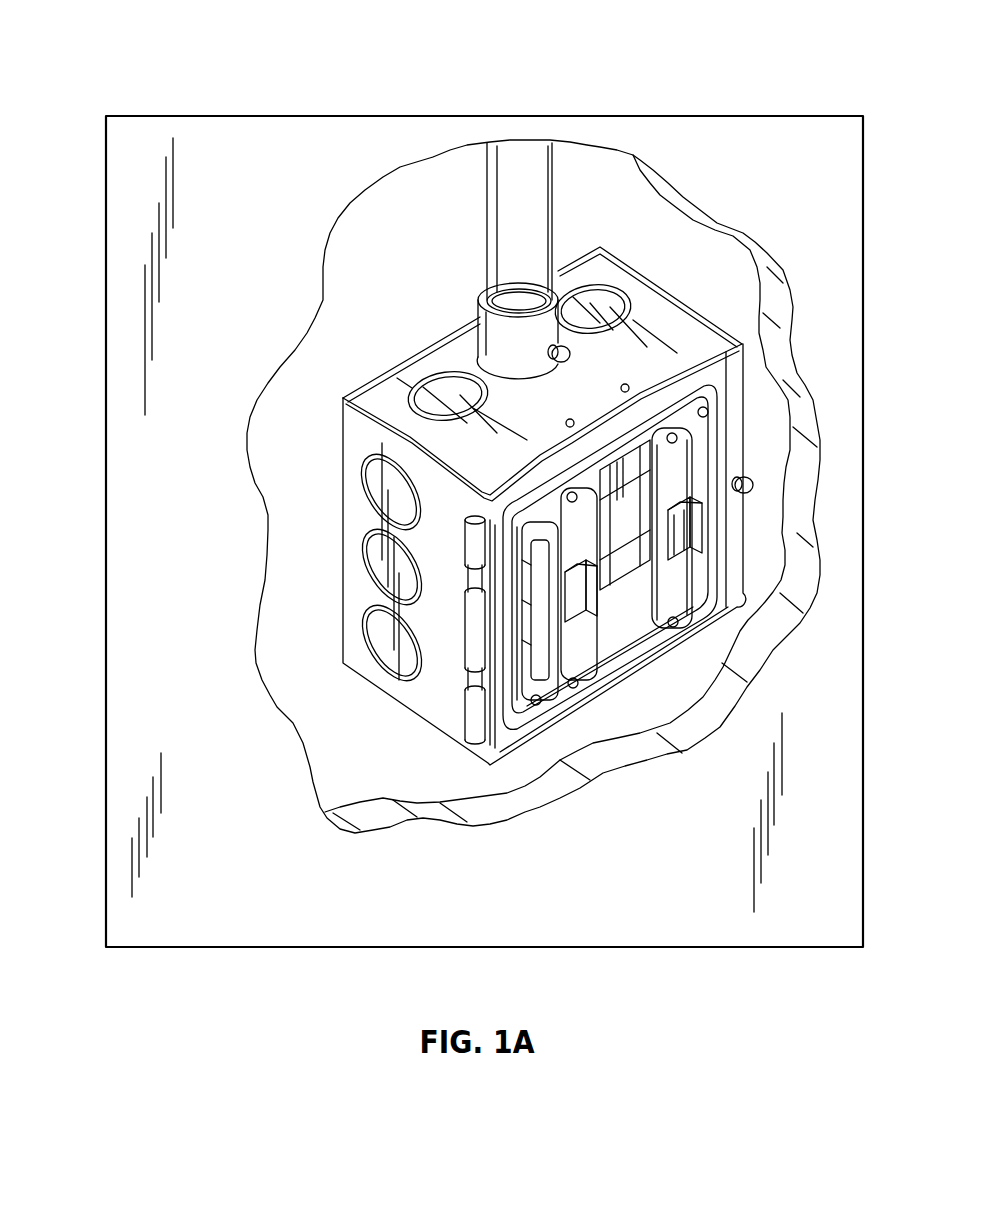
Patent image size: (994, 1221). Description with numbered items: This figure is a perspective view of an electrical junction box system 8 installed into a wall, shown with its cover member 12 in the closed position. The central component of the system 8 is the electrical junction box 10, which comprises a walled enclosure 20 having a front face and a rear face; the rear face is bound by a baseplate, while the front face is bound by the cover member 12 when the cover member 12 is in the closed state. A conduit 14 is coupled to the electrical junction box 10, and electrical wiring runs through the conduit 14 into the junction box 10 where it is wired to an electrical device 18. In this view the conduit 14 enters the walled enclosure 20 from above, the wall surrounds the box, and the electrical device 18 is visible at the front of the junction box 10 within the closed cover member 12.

The electrical junction box system 8 is at (696, 273).
The electrical junction box 10 is at (296, 505).
The cover member 12 is at (592, 695).
The conduit 14 is at (487, 193).
The electrical device 18 is at (693, 545).
The walled enclosure 20 is at (430, 353).